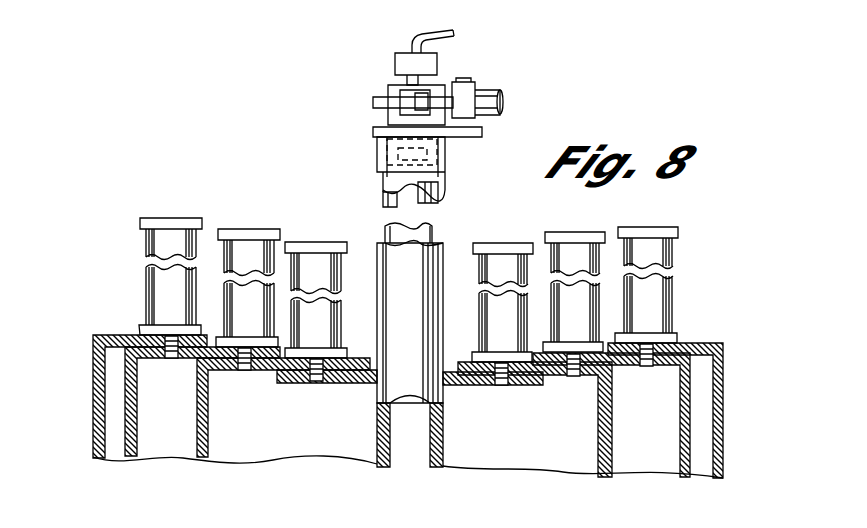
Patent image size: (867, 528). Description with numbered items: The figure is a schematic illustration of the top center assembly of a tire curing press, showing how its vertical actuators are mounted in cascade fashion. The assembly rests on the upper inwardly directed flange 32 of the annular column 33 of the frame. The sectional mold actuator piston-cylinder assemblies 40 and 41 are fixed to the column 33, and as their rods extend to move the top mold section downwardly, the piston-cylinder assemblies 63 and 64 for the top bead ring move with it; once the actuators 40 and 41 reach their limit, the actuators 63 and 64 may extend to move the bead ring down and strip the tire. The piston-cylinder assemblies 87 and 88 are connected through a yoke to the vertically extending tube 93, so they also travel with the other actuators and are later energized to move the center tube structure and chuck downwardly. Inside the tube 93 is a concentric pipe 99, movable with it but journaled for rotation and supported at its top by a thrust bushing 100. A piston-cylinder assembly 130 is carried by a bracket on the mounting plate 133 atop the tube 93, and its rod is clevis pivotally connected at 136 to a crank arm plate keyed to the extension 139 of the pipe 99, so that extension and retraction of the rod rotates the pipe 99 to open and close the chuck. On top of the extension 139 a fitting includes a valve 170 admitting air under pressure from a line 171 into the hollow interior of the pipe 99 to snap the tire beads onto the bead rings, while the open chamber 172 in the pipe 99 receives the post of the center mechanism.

The upper inwardly directed flange 32 is at (698, 345).
The annular column 33 is at (723, 388).
The sectional mold actuator piston-cylinder assembly 40 is at (164, 243).
The sectional mold actuator piston-cylinder assembly 41 is at (640, 245).
The piston-cylinder assembly 63 is at (246, 247).
The piston-cylinder assembly 64 is at (572, 250).
The piston-cylinder assembly 87 is at (308, 260).
The piston-cylinder assembly 88 is at (497, 262).
The tube 93 is at (380, 182).
The pipe 99 is at (440, 198).
The thrust bushing 100 is at (440, 156).
The piston-cylinder assembly 130 is at (501, 86).
The mounting plate 133 is at (374, 130).
The clevis pivotal connection 136 is at (429, 90).
The extension 139 is at (390, 88).
The valve 170 is at (401, 55).
The line 171 is at (451, 30).
The open chamber 172 is at (408, 447).